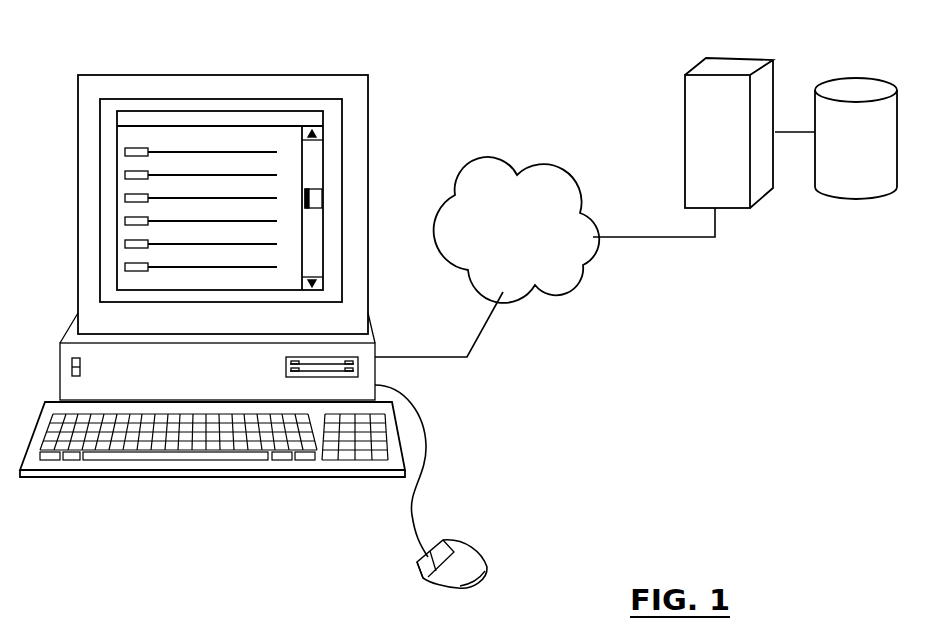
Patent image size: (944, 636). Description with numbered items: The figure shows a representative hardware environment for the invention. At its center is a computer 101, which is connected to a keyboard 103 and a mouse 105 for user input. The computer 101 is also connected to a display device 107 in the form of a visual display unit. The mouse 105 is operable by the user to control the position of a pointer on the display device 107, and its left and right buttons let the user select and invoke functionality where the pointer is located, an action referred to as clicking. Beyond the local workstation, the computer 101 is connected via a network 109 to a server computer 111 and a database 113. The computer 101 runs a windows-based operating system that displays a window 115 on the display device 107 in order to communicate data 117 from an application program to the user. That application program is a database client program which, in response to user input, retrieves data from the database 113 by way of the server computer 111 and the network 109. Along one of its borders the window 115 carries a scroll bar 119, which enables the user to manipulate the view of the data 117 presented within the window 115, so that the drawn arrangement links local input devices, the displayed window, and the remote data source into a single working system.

The computer 101 is at (63, 358).
The keyboard 103 is at (172, 472).
The mouse 105 is at (415, 562).
The display device 107 is at (272, 82).
The network 109 is at (535, 244).
The server computer 111 is at (729, 142).
The database 113 is at (870, 142).
The window 115 is at (135, 118).
The data 117 is at (126, 175).
The scroll bar 119 is at (323, 174).